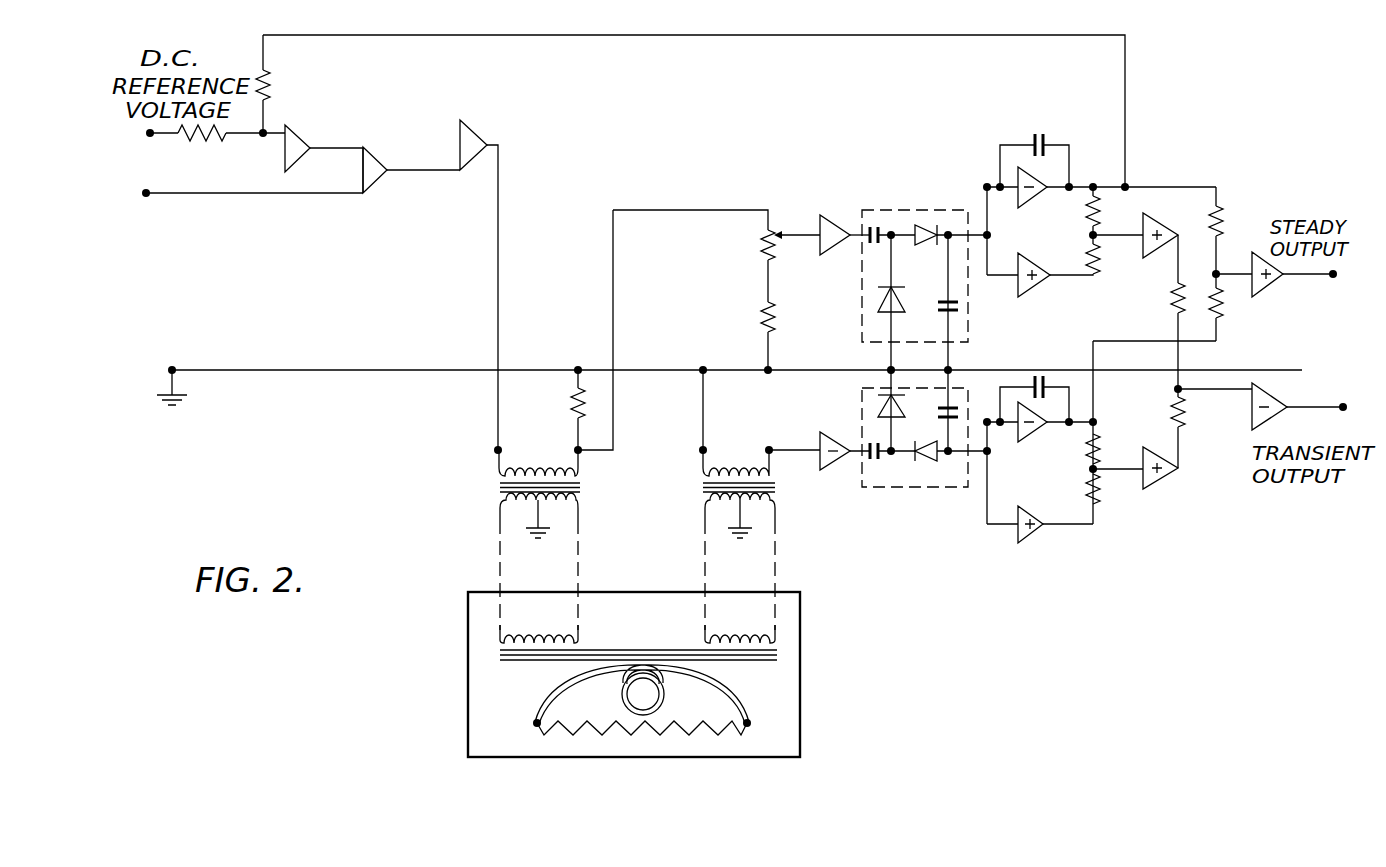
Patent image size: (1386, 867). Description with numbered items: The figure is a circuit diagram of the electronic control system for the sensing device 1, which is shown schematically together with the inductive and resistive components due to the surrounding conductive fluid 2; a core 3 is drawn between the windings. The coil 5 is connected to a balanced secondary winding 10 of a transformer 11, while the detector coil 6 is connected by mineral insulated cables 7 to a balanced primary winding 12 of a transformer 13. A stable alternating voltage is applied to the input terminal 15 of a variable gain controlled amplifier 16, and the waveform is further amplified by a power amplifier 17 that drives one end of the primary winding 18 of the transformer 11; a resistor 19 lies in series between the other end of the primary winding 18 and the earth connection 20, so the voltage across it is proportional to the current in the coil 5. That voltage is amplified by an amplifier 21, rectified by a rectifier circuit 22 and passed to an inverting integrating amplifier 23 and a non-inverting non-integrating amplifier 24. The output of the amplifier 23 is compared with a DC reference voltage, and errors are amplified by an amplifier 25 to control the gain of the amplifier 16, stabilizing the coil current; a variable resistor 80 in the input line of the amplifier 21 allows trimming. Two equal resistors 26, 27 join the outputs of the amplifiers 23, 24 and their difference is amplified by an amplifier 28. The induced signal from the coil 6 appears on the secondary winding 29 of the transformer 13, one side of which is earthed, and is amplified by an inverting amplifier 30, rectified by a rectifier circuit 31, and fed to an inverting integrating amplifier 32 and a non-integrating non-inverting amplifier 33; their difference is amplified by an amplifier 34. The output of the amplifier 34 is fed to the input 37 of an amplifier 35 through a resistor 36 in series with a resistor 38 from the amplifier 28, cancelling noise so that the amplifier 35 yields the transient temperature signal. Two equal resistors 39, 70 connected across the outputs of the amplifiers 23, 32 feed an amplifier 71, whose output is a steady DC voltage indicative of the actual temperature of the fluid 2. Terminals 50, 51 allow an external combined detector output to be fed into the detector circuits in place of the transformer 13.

The device 1 is at (455, 714).
The conductive fluid 2 is at (757, 722).
The magnetic core 3 is at (500, 650).
The coil 5 is at (582, 636).
The detector coil 6 is at (778, 633).
The mineral insulated cables 7 is at (499, 556).
The balanced secondary winding 10 is at (582, 506).
The transformer 11 is at (494, 495).
The balanced primary winding 12 is at (777, 506).
The transformer 13 is at (688, 479).
The input terminal 15 is at (148, 192).
The variable gain controlled amplifier 16 is at (372, 158).
The integrated circuit power amplifier 17 is at (477, 142).
The primary winding 18 is at (496, 450).
The resistor 19 is at (573, 405).
The earth connection 20 is at (172, 370).
The amplifier 21 is at (828, 215).
The rectifier circuit 22 is at (871, 210).
The inverting integrating amplifier 23 is at (1015, 175).
The non-inverting non-integrating amplifier 24 is at (1027, 292).
The amplifier 25 is at (300, 132).
The resistor 26 is at (1086, 211).
The resistor 27 is at (1088, 253).
The amplifier 28 is at (1152, 213).
The secondary winding 29 is at (712, 463).
The inverting amplifier 30 is at (832, 433).
The rectifier circuit 31 is at (935, 488).
The inverting integrating amplifier 32 is at (1023, 405).
The non-integrating non-inverting amplifier 33 is at (1030, 536).
The amplifier 34 is at (1160, 486).
The amplifier 35 is at (1270, 392).
The resistor 36 is at (1186, 410).
The input 37 is at (1172, 390).
The resistor 38 is at (1170, 292).
The resistor 39 is at (1220, 213).
The terminal 50 is at (703, 455).
The terminal 51 is at (768, 448).
The resistor 70 is at (1224, 305).
The amplifier 71 is at (1252, 259).
The variable resistor 80 is at (762, 240).